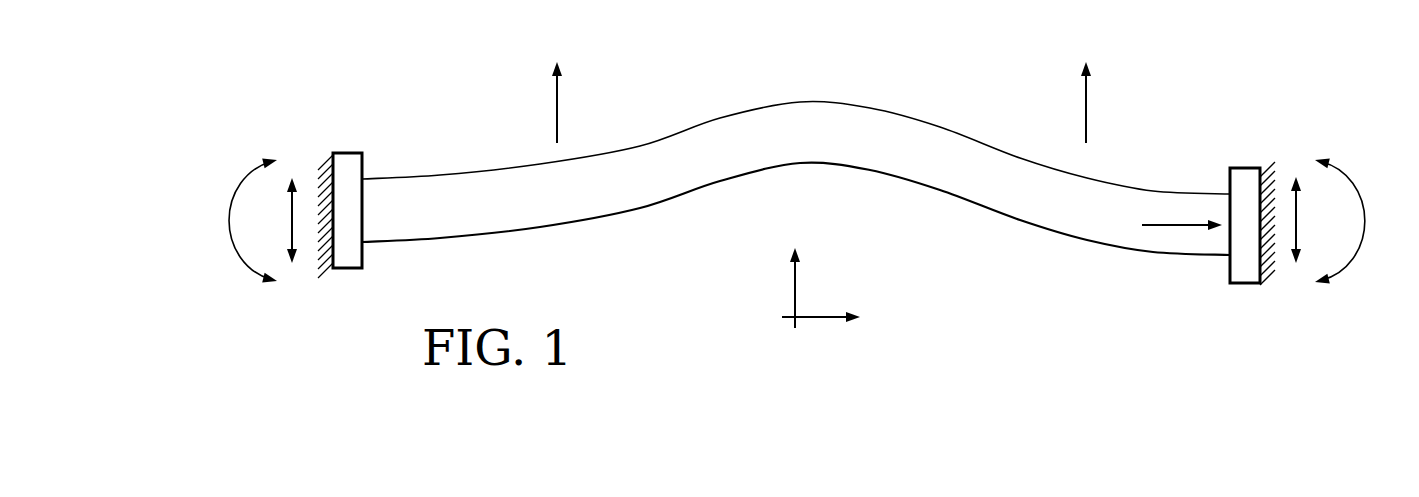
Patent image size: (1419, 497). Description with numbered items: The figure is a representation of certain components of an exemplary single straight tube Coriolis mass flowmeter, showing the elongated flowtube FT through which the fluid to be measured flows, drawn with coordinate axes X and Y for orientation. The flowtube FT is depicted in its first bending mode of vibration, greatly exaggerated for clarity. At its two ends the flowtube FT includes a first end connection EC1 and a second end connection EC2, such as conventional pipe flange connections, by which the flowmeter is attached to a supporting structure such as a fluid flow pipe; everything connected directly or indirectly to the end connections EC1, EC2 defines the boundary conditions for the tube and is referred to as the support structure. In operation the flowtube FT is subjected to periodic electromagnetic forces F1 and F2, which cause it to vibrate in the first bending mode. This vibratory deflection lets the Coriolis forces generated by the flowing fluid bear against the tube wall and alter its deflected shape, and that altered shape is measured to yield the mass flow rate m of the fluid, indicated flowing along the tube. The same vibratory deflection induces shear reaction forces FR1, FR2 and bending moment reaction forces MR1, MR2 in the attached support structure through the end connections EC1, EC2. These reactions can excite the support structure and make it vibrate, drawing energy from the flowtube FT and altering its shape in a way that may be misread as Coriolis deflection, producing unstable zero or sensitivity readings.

The flowtube FT is at (859, 99).
The first end connection EC1 is at (343, 153).
The second end connection EC2 is at (1237, 168).
The periodic electromagnetic force F1 is at (574, 101).
The periodic electromagnetic force F2 is at (1103, 101).
The shear reaction force FR1 is at (294, 242).
The shear reaction force FR2 is at (1291, 240).
The bending moment reaction force MR1 is at (234, 259).
The bending moment reaction force MR2 is at (1356, 258).
The mass flow rate m is at (1182, 213).
The X axis X is at (832, 317).
The Y axis Y is at (806, 287).